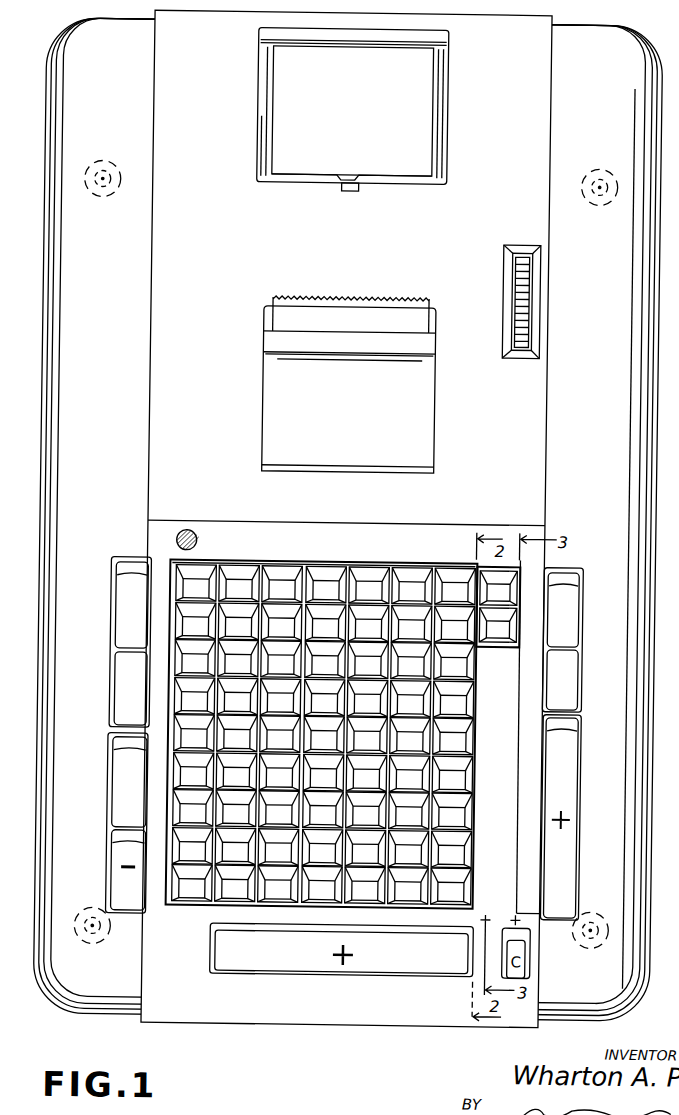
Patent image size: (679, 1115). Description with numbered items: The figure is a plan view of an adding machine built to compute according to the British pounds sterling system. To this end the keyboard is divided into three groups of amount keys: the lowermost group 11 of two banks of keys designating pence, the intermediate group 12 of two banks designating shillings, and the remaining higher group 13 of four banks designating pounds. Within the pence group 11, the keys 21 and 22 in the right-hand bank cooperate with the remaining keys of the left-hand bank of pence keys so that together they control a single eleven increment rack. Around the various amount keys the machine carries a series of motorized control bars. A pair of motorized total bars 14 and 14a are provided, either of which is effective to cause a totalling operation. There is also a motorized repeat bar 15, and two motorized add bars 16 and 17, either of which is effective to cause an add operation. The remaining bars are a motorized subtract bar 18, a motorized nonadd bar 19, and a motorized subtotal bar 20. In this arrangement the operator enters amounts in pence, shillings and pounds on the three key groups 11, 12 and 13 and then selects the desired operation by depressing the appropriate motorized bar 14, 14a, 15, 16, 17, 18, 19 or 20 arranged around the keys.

The lowermost group 11 is at (354, 718).
The intermediate group 12 is at (407, 573).
The higher group 13 is at (313, 573).
The motorized total bar 14 is at (572, 592).
The motorized total bar 14a is at (123, 594).
The motorized repeat bar 15 is at (572, 666).
The motorized add bar 16 is at (569, 792).
The motorized add bar 17 is at (364, 963).
The motorized subtract bar 18 is at (125, 880).
The motorized nonadd bar 19 is at (120, 803).
The motorized subtotal bar 20 is at (123, 710).
The key 21 is at (515, 592).
The key 22 is at (500, 643).